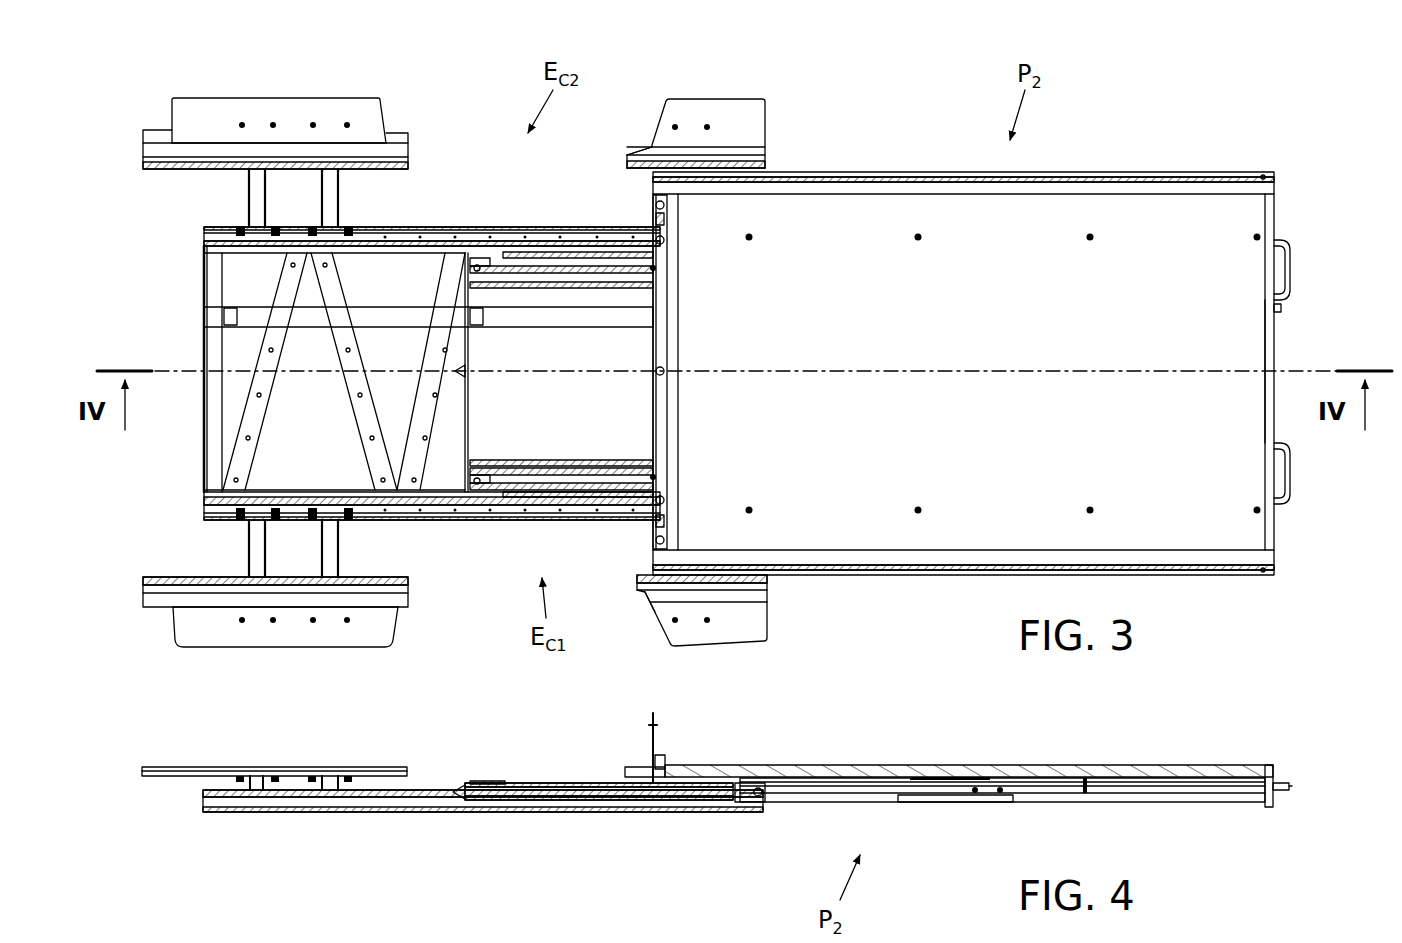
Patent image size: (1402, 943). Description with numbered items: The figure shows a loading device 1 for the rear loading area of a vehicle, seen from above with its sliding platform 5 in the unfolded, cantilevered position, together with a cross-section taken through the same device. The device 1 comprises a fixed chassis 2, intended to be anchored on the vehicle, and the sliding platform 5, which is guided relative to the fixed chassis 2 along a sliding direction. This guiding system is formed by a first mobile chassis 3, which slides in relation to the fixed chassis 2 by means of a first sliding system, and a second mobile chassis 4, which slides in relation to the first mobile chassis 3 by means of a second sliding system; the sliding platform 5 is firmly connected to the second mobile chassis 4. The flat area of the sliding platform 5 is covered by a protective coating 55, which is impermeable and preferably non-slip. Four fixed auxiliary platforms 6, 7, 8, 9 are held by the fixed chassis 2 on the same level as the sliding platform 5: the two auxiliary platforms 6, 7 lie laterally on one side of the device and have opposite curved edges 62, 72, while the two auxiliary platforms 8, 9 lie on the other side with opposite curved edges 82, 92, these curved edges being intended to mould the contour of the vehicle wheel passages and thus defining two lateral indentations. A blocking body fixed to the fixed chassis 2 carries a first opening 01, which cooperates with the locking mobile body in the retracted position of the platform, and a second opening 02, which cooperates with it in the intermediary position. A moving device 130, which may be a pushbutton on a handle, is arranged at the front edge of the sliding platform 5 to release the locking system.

In FIG. 3, the loading device 1 is at (487, 72).
In FIG. 4, the loading device 1 is at (308, 872).
In FIG. 3, the fixed chassis 2 is at (469, 540).
In FIG. 4, the fixed chassis 2 is at (375, 783).
In FIG. 4, the first mobile chassis 3 is at (655, 803).
In FIG. 4, the second mobile chassis 4 is at (1120, 788).
In FIG. 3, the sliding platform 5 is at (945, 525).
In FIG. 4, the sliding platform 5 is at (1137, 768).
In FIG. 3, the auxiliary platform 6 is at (758, 623).
In FIG. 3, the curved edge 62 is at (655, 618).
In FIG. 3, the auxiliary platform 7 is at (195, 628).
In FIG. 3, the curved edge 72 is at (393, 622).
In FIG. 3, the auxiliary platform 8 is at (725, 120).
In FIG. 3, the curved edge 82 is at (654, 128).
In FIG. 3, the auxiliary platform 9 is at (300, 105).
In FIG. 4, the auxiliary platform 9 is at (359, 767).
In FIG. 3, the curved edge 92 is at (393, 135).
In FIG. 3, the first opening 01 is at (233, 314).
In FIG. 3, the second opening 02 is at (483, 316).
In FIG. 3, the protective coating 55 is at (1045, 343).
In FIG. 3, the moving device 130 is at (1288, 312).